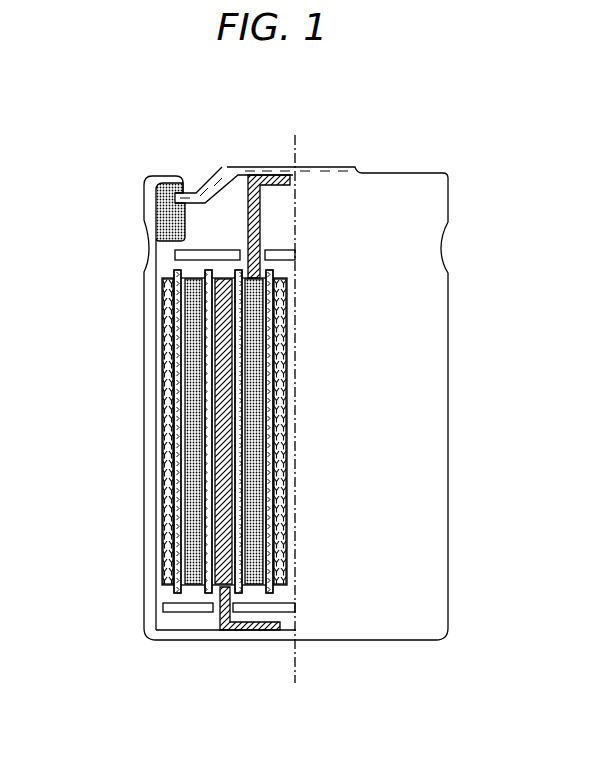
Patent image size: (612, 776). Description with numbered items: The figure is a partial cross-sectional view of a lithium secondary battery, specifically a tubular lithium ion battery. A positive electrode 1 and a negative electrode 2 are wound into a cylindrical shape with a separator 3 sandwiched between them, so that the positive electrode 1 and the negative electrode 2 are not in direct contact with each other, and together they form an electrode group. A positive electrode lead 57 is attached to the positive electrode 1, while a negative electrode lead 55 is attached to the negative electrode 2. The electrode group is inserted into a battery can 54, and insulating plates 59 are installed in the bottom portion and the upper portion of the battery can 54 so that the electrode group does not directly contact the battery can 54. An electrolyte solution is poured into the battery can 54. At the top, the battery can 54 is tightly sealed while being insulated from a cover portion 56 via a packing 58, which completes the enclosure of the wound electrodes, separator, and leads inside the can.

The positive electrode 1 is at (183, 442).
The negative electrode 2 is at (165, 505).
The separator 3 is at (175, 591).
The battery can 54 is at (144, 435).
The negative electrode lead 55 is at (212, 632).
The cover portion 56 is at (343, 166).
The positive electrode lead 57 is at (248, 204).
The packing 58 is at (188, 190).
The insulating plates 59 is at (165, 257).